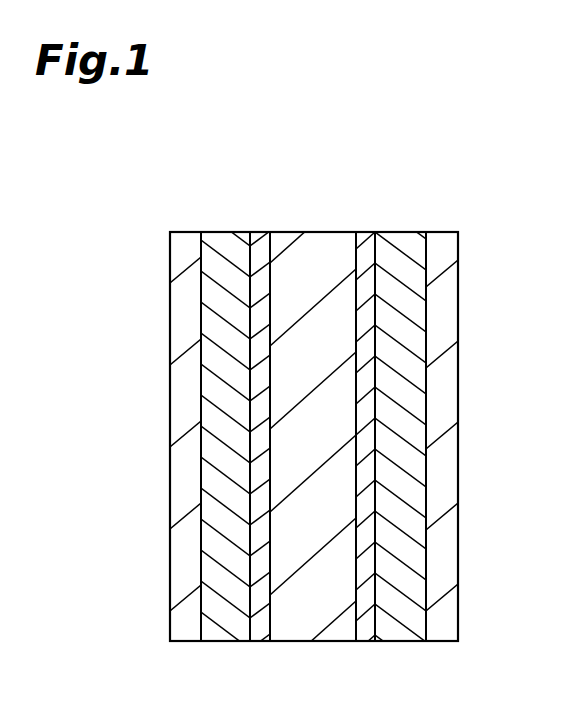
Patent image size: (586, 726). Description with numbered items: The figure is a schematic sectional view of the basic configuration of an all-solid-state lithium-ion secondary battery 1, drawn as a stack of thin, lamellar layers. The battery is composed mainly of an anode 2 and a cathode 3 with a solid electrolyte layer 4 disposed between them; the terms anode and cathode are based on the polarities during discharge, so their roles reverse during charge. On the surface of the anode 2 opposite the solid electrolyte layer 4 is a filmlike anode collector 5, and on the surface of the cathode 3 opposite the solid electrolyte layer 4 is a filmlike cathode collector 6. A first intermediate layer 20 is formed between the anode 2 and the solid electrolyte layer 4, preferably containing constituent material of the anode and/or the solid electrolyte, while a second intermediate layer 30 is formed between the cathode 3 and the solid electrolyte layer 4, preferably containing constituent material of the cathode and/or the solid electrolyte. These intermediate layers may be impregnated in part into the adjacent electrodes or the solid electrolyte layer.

The all-solid-state lithium-ion secondary battery 1 is at (452, 168).
The anode 2 is at (400, 630).
The cathode 3 is at (222, 632).
The solid electrolyte layer 4 is at (306, 632).
The anode collector 5 is at (442, 630).
The cathode collector 6 is at (181, 632).
The first intermediate layer 20 is at (363, 231).
The second intermediate layer 30 is at (260, 231).